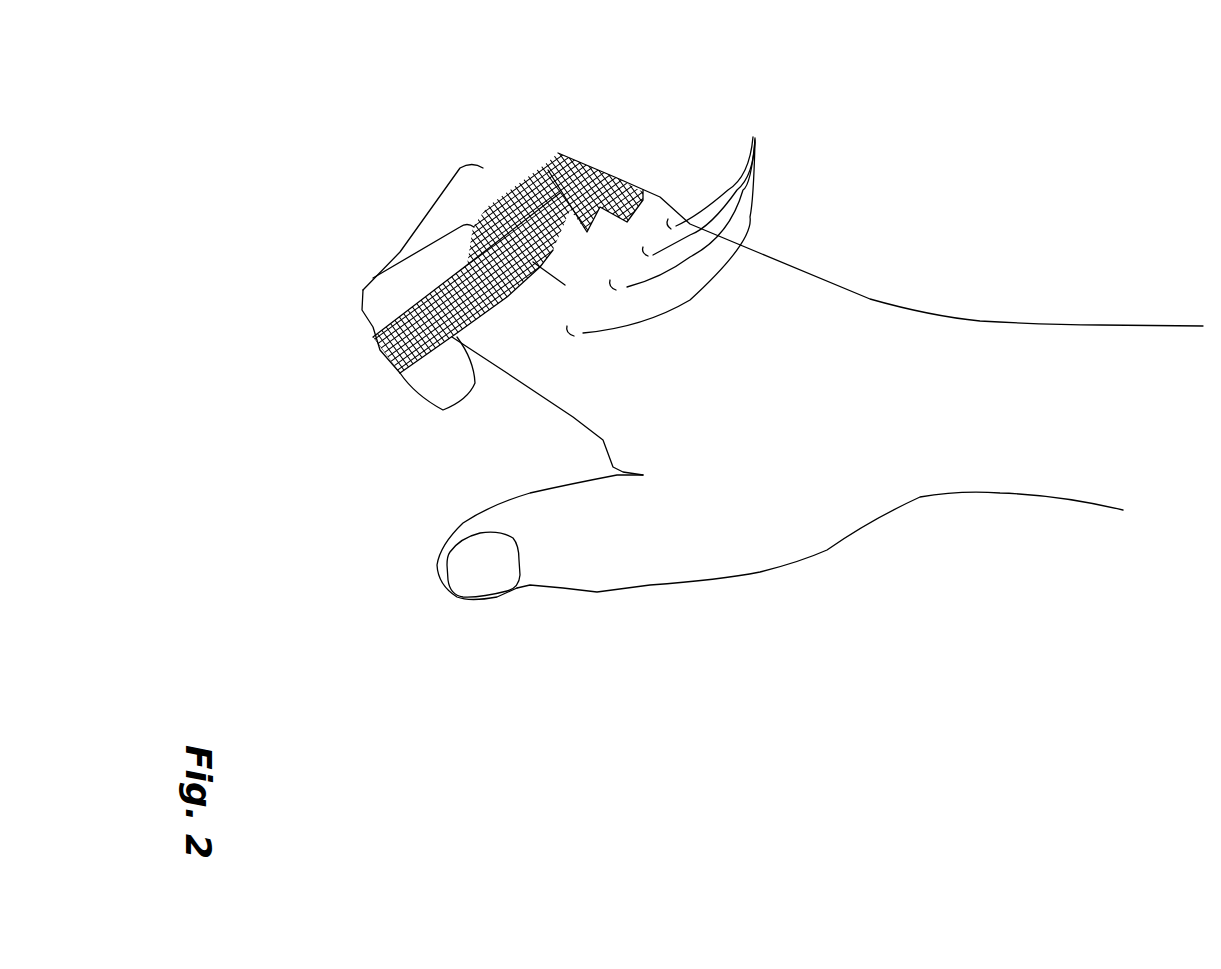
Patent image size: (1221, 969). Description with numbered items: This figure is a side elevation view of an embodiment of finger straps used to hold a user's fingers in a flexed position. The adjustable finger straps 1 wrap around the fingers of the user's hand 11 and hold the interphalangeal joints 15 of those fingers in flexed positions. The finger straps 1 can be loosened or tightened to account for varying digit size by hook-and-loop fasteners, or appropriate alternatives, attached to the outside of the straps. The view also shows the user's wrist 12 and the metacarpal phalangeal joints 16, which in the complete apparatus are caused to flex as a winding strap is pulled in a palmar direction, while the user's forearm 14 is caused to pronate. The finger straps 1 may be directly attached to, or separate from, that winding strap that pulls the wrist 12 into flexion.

The adjustable finger straps 1 is at (510, 256).
The hand 11 is at (653, 387).
The wrist 12 is at (897, 418).
The forearm 14 is at (1148, 377).
The interphalangeal joints 15 is at (560, 157).
The metacarpal phalangeal joints 16 is at (757, 137).